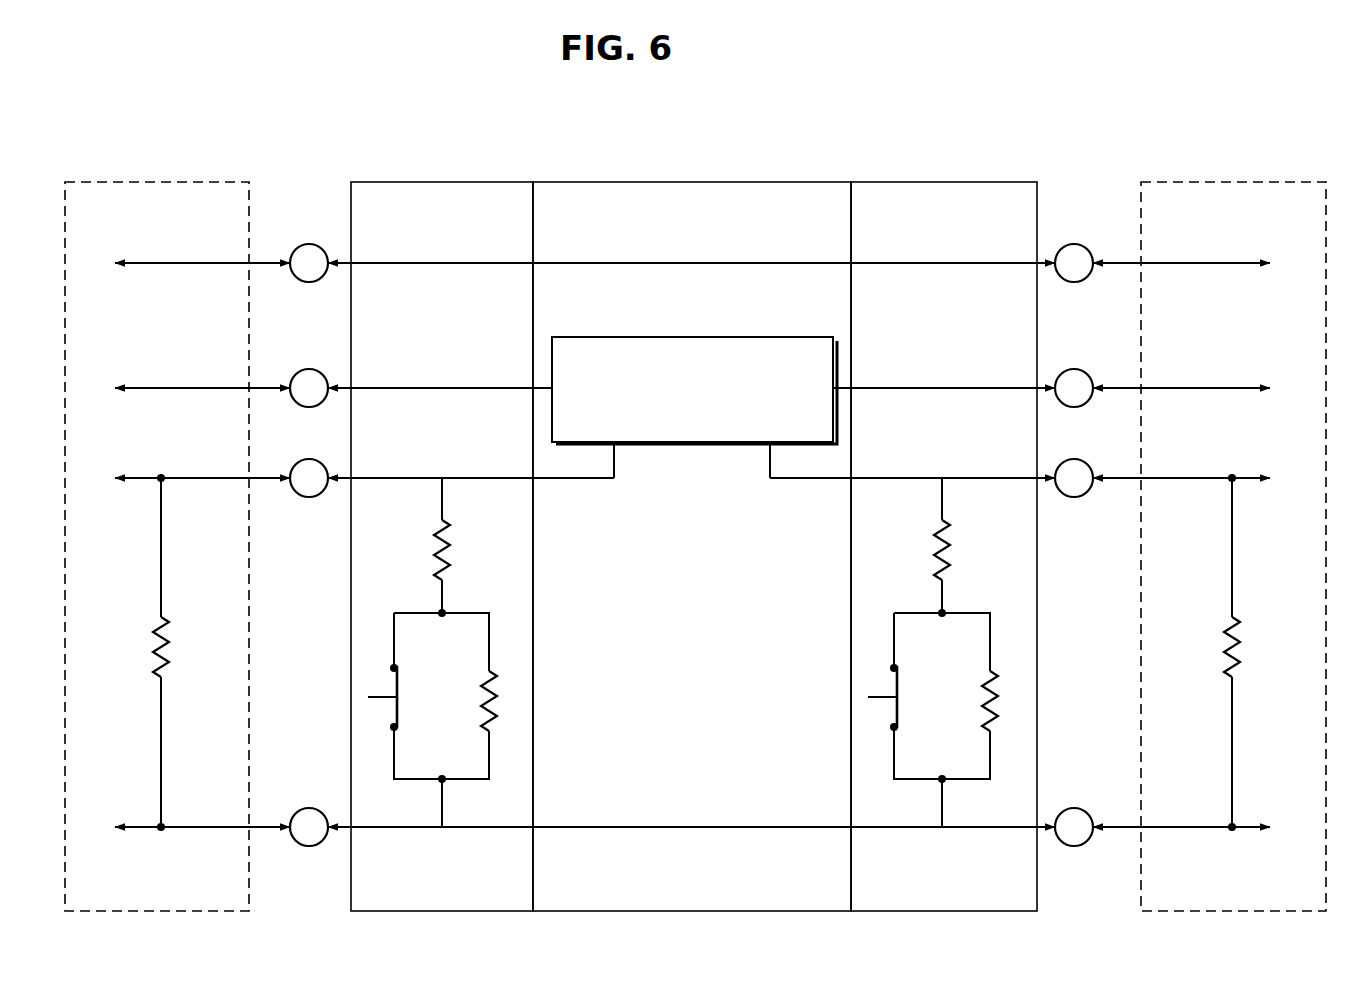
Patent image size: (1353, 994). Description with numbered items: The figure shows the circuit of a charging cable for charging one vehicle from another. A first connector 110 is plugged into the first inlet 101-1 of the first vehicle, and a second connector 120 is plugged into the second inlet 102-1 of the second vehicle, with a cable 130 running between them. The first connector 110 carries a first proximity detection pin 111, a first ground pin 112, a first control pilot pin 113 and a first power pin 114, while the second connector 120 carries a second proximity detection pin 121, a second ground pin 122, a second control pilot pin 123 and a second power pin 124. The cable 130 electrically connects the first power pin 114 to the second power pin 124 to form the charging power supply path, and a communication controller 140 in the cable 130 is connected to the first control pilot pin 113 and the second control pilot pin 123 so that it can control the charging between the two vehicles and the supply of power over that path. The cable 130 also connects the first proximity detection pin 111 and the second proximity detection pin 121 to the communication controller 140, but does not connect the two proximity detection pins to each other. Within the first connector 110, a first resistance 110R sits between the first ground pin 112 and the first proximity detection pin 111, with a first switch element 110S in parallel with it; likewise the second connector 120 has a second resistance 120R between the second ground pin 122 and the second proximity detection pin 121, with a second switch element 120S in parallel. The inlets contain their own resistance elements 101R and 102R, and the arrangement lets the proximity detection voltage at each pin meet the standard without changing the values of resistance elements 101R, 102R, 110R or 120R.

The first inlet 101-1 is at (226, 182).
The second inlet 102-1 is at (1296, 182).
The first connector 110 is at (434, 182).
The second connector 120 is at (1006, 182).
The cable 130 is at (820, 182).
The communication controller 140 is at (773, 337).
The first proximity detection pin 111 is at (309, 497).
The first ground pin 112 is at (309, 846).
The first control pilot pin 113 is at (309, 369).
The first power pin 114 is at (309, 244).
The second proximity detection pin 121 is at (1074, 497).
The second ground pin 122 is at (1074, 846).
The second control pilot pin 123 is at (1074, 369).
The second power pin 124 is at (1074, 244).
The resistance element of the first inlet 101R is at (161, 622).
The resistance element of the second inlet 102R is at (1232, 622).
The first switch element 110S is at (397, 680).
The second switch element 120S is at (897, 680).
The first resistance 110R is at (489, 735).
The second resistance 120R is at (990, 675).